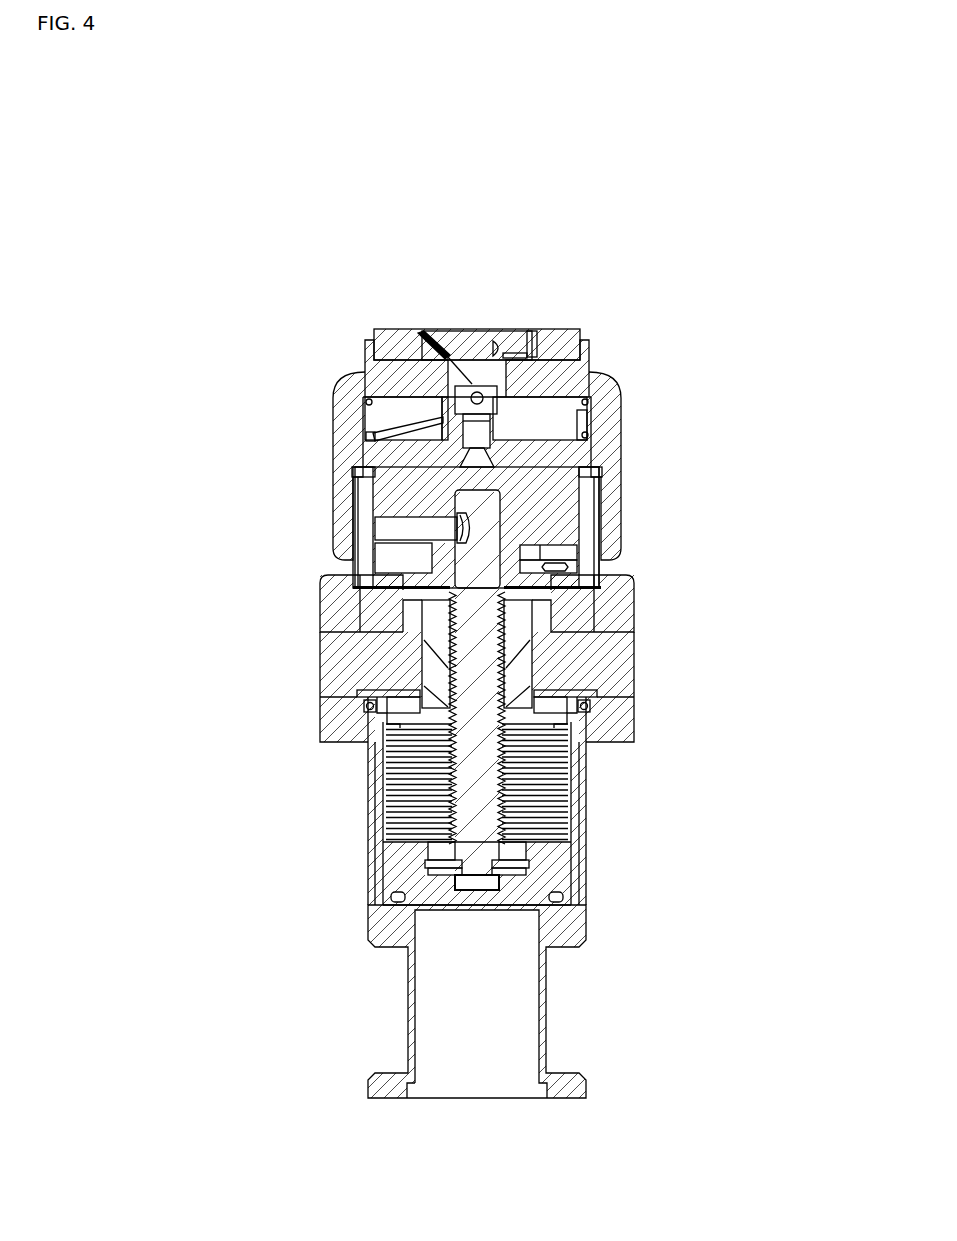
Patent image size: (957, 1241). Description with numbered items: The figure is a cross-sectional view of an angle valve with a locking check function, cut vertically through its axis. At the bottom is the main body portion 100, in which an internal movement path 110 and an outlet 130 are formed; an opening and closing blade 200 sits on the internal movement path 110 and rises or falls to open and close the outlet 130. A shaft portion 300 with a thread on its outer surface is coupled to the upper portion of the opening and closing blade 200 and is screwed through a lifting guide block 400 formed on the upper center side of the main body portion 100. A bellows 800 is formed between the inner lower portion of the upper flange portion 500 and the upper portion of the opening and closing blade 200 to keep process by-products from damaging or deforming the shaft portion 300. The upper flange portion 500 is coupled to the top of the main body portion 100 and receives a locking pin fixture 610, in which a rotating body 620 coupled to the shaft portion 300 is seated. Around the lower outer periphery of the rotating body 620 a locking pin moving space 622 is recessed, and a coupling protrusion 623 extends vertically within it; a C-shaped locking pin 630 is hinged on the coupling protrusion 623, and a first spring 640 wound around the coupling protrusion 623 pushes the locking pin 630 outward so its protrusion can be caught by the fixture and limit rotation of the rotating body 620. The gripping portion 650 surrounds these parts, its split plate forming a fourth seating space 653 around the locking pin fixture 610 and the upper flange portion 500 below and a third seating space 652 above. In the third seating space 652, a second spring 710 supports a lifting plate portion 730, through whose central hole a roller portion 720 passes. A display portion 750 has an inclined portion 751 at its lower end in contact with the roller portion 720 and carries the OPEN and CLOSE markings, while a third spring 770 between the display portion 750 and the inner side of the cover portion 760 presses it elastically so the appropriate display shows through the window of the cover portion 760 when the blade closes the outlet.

The main body portion 100 is at (373, 868).
The internal movement path 110 is at (573, 808).
The outlet 130 is at (545, 1008).
The opening and closing blade 200 is at (540, 878).
The shaft portion 300 is at (482, 735).
The lifting guide block 400 is at (515, 665).
The upper flange portion 500 is at (383, 668).
The locking pin fixture 610 is at (403, 560).
The rotating body 620 is at (557, 513).
The locking pin moving space 622 is at (356, 572).
The coupling protrusion 623 is at (560, 568).
The locking pin 630 is at (562, 550).
The first spring 640 is at (545, 576).
The gripping portion 650 is at (350, 408).
The third seating space 652 is at (543, 423).
The fourth seating space 653 is at (352, 470).
The second spring 710 is at (380, 435).
The roller portion 720 is at (507, 392).
The lifting plate portion 730 is at (388, 374).
The display portion 750 is at (482, 335).
The inclined portion 751 is at (437, 330).
The cover portion 760 is at (392, 338).
The third spring 770 is at (532, 333).
The bellows 800 is at (398, 785).